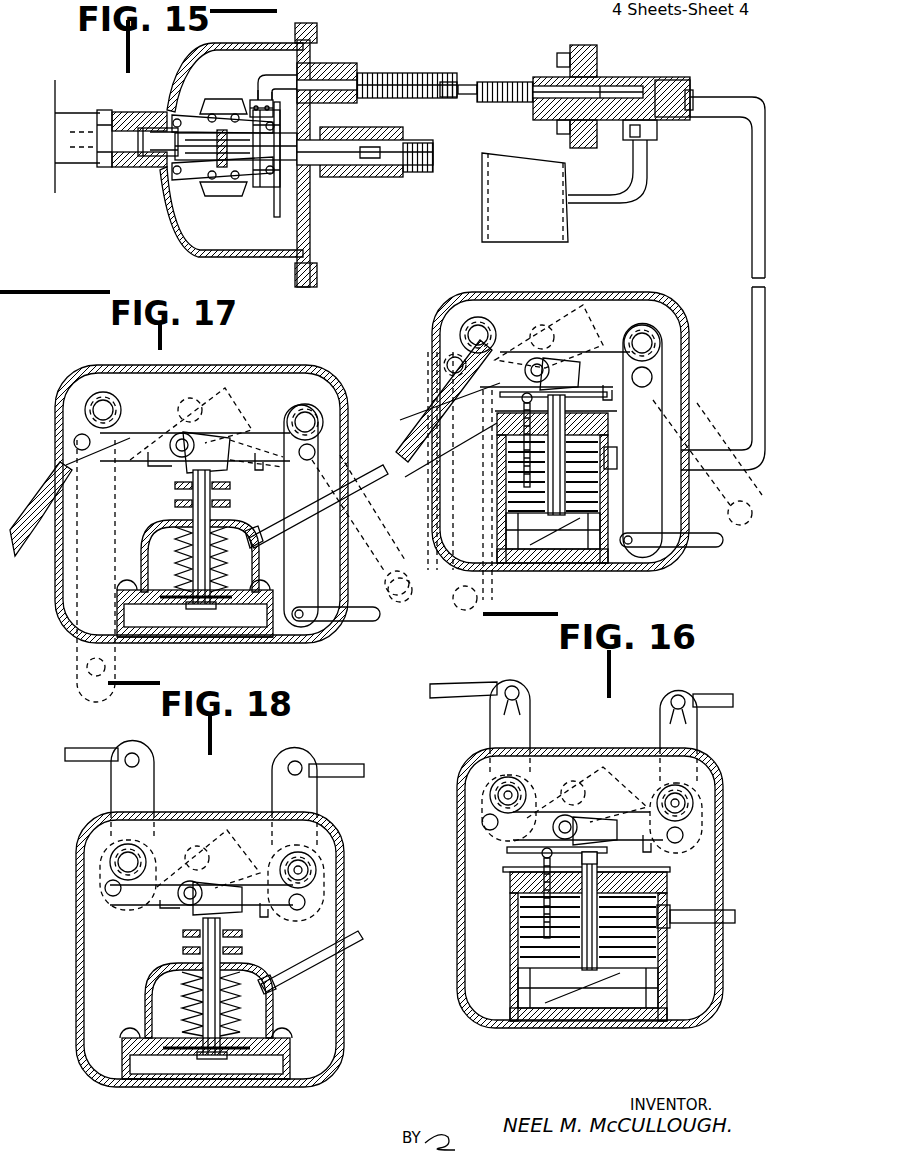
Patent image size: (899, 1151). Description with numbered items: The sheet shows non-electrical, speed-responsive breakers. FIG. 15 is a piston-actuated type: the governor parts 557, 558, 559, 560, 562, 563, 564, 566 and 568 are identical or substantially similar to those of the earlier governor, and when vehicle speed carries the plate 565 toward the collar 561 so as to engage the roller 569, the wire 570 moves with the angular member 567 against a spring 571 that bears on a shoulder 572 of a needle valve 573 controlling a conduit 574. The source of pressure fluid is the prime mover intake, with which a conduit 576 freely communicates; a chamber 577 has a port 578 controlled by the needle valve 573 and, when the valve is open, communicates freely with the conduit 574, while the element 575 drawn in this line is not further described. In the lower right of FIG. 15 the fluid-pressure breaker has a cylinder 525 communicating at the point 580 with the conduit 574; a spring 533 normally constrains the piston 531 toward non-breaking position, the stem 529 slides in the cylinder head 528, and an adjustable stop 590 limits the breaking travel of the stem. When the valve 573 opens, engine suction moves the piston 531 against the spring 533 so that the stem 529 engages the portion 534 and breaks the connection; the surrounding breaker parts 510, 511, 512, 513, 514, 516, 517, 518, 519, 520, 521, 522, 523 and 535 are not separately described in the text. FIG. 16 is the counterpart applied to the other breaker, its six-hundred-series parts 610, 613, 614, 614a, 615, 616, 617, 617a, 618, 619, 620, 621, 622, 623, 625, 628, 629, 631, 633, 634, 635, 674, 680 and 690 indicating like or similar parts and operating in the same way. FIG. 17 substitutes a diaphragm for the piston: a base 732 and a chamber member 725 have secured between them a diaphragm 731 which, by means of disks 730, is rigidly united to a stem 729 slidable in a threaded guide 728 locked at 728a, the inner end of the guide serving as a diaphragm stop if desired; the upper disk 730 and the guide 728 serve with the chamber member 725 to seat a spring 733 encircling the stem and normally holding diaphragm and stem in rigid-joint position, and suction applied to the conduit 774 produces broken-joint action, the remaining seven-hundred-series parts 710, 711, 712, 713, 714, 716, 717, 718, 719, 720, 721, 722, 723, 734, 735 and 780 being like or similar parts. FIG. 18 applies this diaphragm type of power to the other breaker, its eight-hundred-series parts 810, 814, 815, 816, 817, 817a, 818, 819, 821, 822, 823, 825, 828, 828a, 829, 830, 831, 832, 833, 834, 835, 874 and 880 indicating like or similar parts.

In FIG. 15, the switch casing 510 is at (530, 294).
In FIG. 15, the lever 511 is at (428, 513).
In FIG. 15, the lever 512 is at (683, 508).
In FIG. 15, the boss 513 is at (470, 320).
In FIG. 15, the arm 514 is at (420, 407).
In FIG. 15, the boss 516 is at (648, 338).
In FIG. 15, the lever arm 517 is at (645, 430).
In FIG. 15, the mounting plate 518 is at (505, 357).
In FIG. 15, the rod 519 is at (700, 548).
In FIG. 15, the pivot pin 520 is at (450, 362).
In FIG. 15, the toggle 521 is at (562, 340).
In FIG. 15, the toggle lever 522 is at (598, 367).
In FIG. 15, the pin 523 is at (653, 373).
In FIG. 15, the cylinder 525 is at (497, 470).
In FIG. 15, the cylinder head 528 is at (565, 417).
In FIG. 15, the stem 529 is at (567, 395).
In FIG. 15, the piston 531 is at (530, 527).
In FIG. 15, the spring 533 is at (497, 505).
In FIG. 15, the portion 534 is at (523, 400).
In FIG. 15, the hook 535 is at (610, 401).
In FIG. 15, the governor part 557 is at (207, 143).
In FIG. 15, the governor part 558 is at (233, 253).
In FIG. 15, the governor part 559 is at (413, 170).
In FIG. 15, the governor part 560 is at (120, 165).
In FIG. 15, the collar 561 is at (150, 173).
In FIG. 15, the governor part 562 is at (270, 147).
In FIG. 15, the governor part 563 is at (210, 187).
In FIG. 15, the governor part 564 is at (210, 158).
In FIG. 15, the plate 565 is at (276, 205).
In FIG. 15, the governor part 566 is at (330, 67).
In FIG. 15, the angular member 567 is at (270, 77).
In FIG. 15, the governor part 568 is at (253, 100).
In FIG. 15, the roller 569 is at (257, 100).
In FIG. 15, the wire 570 is at (465, 83).
In FIG. 15, the spring 571 is at (617, 80).
In FIG. 15, the shoulder 572 is at (647, 80).
In FIG. 15, the needle valve 573 is at (683, 80).
In FIG. 15, the conduit 574 is at (757, 202).
In FIG. 15, the cylinder 575 is at (557, 228).
In FIG. 15, the conduit 576 is at (640, 187).
In FIG. 15, the chamber 577 is at (643, 110).
In FIG. 15, the port 578 is at (693, 93).
In FIG. 15, the communication point 580 is at (613, 473).
In FIG. 15, the adjustable stop 590 is at (440, 452).
In FIG. 17, the switch casing 710 is at (210, 367).
In FIG. 17, the lever 711 is at (63, 610).
In FIG. 17, the lever 712 is at (347, 580).
In FIG. 17, the boss 713 is at (100, 401).
In FIG. 17, the arm 714 is at (32, 503).
In FIG. 17, the boss 716 is at (312, 415).
In FIG. 17, the lever arm 717 is at (302, 516).
In FIG. 17, the mounting plate 718 is at (133, 437).
In FIG. 17, the rod 719 is at (363, 622).
In FIG. 17, the pivot pin 720 is at (76, 441).
In FIG. 17, the pivot 721 is at (182, 433).
In FIG. 17, the toggle lever 722 is at (260, 447).
In FIG. 17, the pin 723 is at (310, 448).
In FIG. 17, the chamber member 725 is at (143, 553).
In FIG. 17, the threaded guide 728 is at (175, 487).
In FIG. 17, the lock 728a is at (175, 505).
In FIG. 17, the stem 729 is at (207, 508).
In FIG. 17, the disks 730 is at (223, 594).
In FIG. 17, the diaphragm 731 is at (163, 602).
In FIG. 17, the base 732 is at (227, 635).
In FIG. 17, the spring 733 is at (189, 559).
In FIG. 17, the bracket 734 is at (177, 465).
In FIG. 17, the hook 735 is at (147, 472).
In FIG. 17, the conduit 774 is at (373, 474).
In FIG. 17, the fitting 780 is at (254, 532).
In FIG. 16, the switch casing 610 is at (458, 960).
In FIG. 16, the boss 613 is at (503, 785).
In FIG. 16, the lever 614 is at (522, 725).
In FIG. 16, the pivot 614a is at (490, 797).
In FIG. 16, the rod 615 is at (464, 688).
In FIG. 16, the boss 616 is at (685, 797).
In FIG. 16, the lever 617 is at (690, 742).
In FIG. 16, the pivot 617a is at (690, 815).
In FIG. 16, the mounting plate 618 is at (540, 822).
In FIG. 16, the rod 619 is at (728, 700).
In FIG. 16, the pin 620 is at (483, 822).
In FIG. 16, the pivot 621 is at (568, 815).
In FIG. 16, the toggle lever 622 is at (620, 818).
In FIG. 16, the pin 623 is at (684, 835).
In FIG. 16, the solenoid frame 625 is at (510, 920).
In FIG. 16, the plunger 628 is at (663, 878).
In FIG. 16, the rod 629 is at (597, 868).
In FIG. 16, the coil bobbin 631 is at (565, 985).
In FIG. 16, the coil winding 633 is at (518, 973).
In FIG. 16, the screw 634 is at (566, 893).
In FIG. 16, the plate 635 is at (507, 849).
In FIG. 16, the tube 674 is at (733, 910).
In FIG. 16, the coupling 680 is at (666, 927).
In FIG. 16, the spring 690 is at (520, 897).
In FIG. 18, the switch casing 810 is at (312, 1087).
In FIG. 18, the lever 814 is at (140, 785).
In FIG. 18, the rod 815 is at (84, 757).
In FIG. 18, the boss 816 is at (308, 866).
In FIG. 18, the lever 817 is at (305, 800).
In FIG. 18, the pivot 817a is at (314, 884).
In FIG. 18, the mounting plate 818 is at (158, 882).
In FIG. 18, the rod 819 is at (334, 766).
In FIG. 18, the pivot 821 is at (192, 880).
In FIG. 18, the toggle lever 822 is at (245, 885).
In FIG. 18, the pin 823 is at (306, 902).
In FIG. 18, the bell housing 825 is at (146, 1012).
In FIG. 18, the bellows plate 828 is at (183, 934).
In FIG. 18, the bellows plate 828a is at (183, 951).
In FIG. 18, the stem 829 is at (222, 922).
In FIG. 18, the disc 830 is at (182, 1040).
In FIG. 18, the base 831 is at (160, 1058).
In FIG. 18, the base plate 832 is at (218, 1088).
In FIG. 18, the spring 833 is at (196, 1004).
In FIG. 18, the bracket 834 is at (188, 915).
In FIG. 18, the hook 835 is at (160, 908).
In FIG. 18, the tube 874 is at (346, 945).
In FIG. 18, the fitting 880 is at (277, 990).